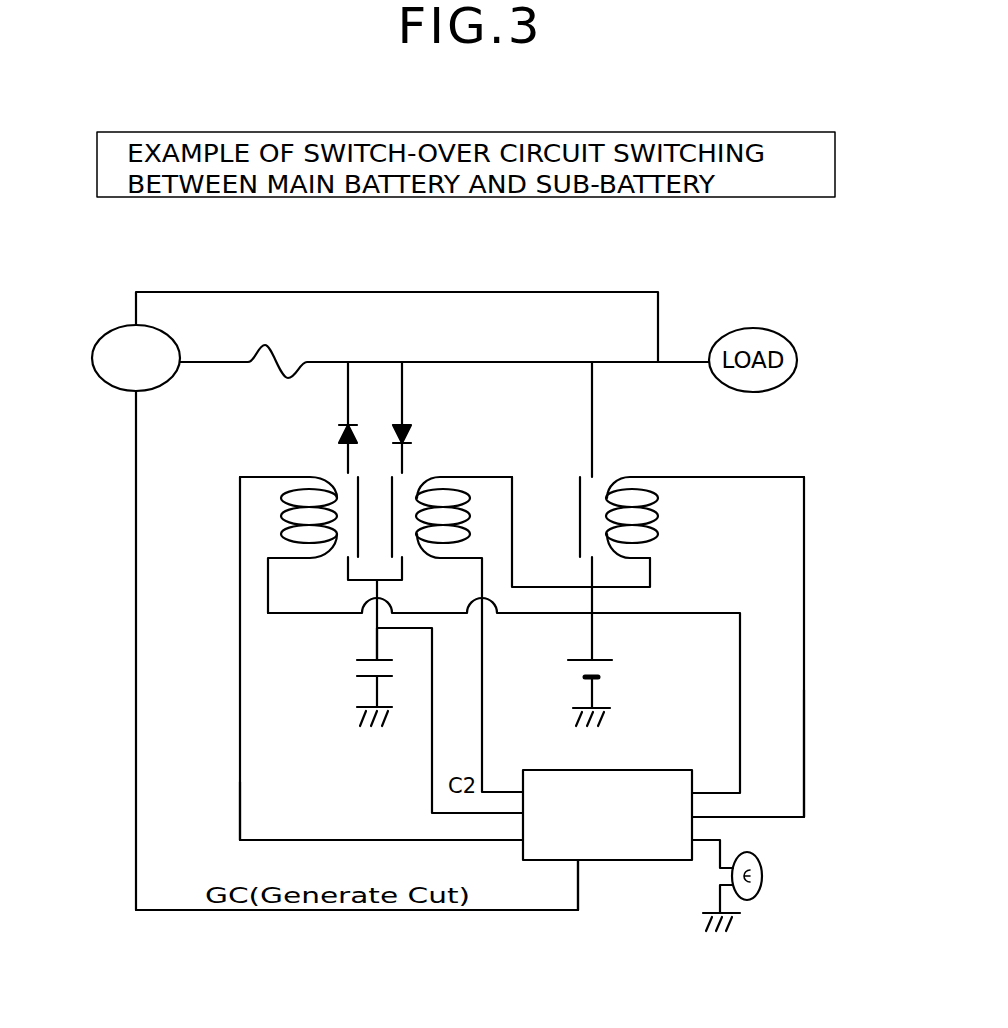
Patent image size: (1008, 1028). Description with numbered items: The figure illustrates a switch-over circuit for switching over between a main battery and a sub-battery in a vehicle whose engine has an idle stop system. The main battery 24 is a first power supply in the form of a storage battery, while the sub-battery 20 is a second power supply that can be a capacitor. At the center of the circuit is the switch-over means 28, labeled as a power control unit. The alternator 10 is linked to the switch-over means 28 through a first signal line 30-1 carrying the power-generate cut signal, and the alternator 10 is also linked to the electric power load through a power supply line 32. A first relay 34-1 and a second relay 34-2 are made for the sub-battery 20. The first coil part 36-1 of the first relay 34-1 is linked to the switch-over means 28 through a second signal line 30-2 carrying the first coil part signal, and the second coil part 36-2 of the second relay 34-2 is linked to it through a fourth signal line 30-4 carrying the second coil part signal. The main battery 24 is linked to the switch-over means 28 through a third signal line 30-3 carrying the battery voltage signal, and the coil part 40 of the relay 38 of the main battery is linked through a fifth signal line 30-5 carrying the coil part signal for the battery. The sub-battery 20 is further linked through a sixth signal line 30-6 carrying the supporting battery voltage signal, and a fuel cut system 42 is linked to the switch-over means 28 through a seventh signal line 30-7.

The alternator 10 is at (102, 335).
The sub-battery 20 is at (355, 668).
The main battery 24 is at (615, 670).
The switch-over means 28 is at (634, 862).
The first signal line 30-1 is at (136, 725).
The second signal line 30-2 is at (240, 782).
The third signal line 30-3 is at (740, 647).
The fourth signal line 30-4 is at (504, 793).
The fifth signal line 30-5 is at (804, 690).
The sixth signal line 30-6 is at (430, 752).
The seventh signal line 30-7 is at (704, 843).
The power supply line 32 is at (472, 361).
The first relay 34-1 is at (281, 601).
The second relay 34-2 is at (533, 551).
The first coil part 36-1 is at (293, 497).
The second coil part 36-2 is at (442, 492).
The relay 38 is at (696, 589).
The coil part 40 is at (657, 533).
The fuel cut system 42 is at (762, 866).